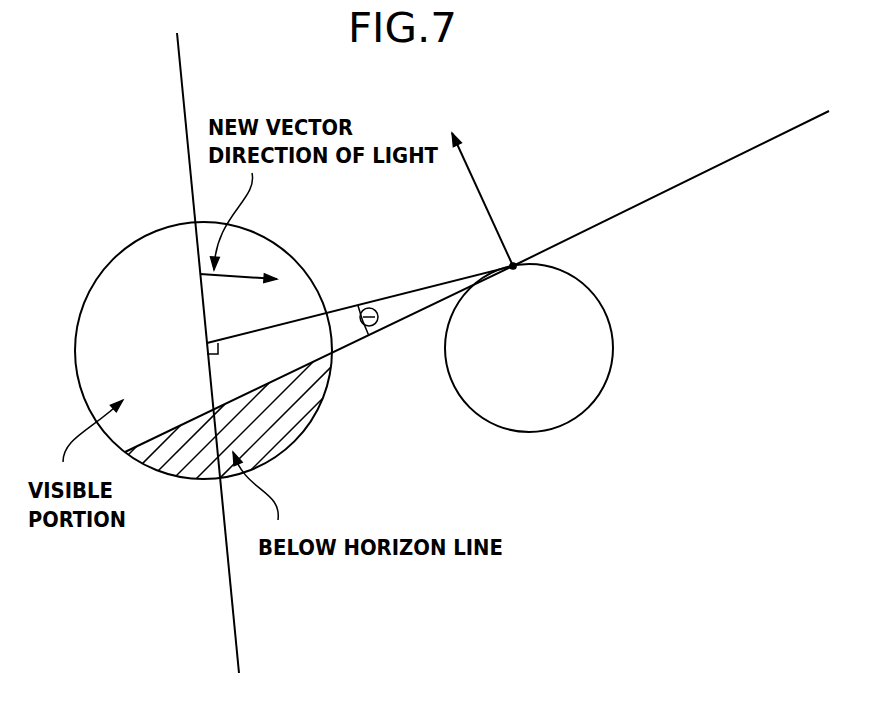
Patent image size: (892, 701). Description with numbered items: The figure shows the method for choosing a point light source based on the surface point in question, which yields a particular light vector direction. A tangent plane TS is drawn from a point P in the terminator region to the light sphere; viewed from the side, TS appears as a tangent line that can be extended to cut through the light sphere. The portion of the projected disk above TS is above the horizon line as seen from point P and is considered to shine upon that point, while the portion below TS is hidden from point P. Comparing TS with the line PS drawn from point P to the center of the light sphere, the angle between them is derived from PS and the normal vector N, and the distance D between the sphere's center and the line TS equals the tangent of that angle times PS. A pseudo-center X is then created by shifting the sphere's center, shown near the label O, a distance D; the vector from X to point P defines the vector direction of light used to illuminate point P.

The pseudo-center X is at (207, 275).
The center of sphere O is at (220, 305).
The distance D is at (200, 379).
The normal vector N is at (482, 199).
The point P is at (513, 257).
The line from point P to the center of the light sphere PS is at (428, 275).
The tangent plane TS is at (351, 355).